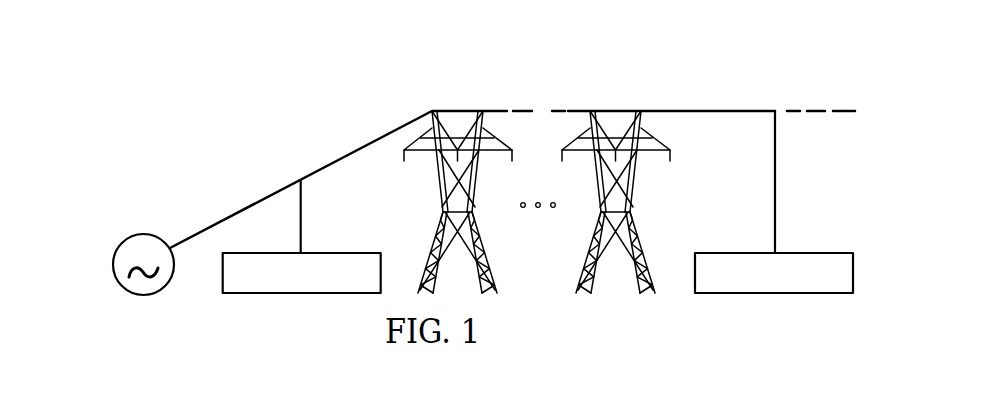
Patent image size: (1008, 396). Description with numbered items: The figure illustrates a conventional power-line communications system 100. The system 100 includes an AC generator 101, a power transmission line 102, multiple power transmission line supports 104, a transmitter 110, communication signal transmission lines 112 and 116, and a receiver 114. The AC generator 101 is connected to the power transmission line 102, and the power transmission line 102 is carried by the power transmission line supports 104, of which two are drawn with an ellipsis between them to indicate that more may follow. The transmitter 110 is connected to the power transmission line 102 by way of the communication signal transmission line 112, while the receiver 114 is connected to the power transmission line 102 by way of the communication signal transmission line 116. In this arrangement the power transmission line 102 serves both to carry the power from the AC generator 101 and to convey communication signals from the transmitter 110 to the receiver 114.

The power-line communications system 100 is at (192, 114).
The AC generator 101 is at (113, 263).
The power transmission line 102 is at (236, 213).
The power transmission line supports 104 is at (433, 180).
The transmitter 110 is at (282, 295).
The communication signal transmission line 112 is at (299, 218).
The receiver 114 is at (793, 295).
The communication signal transmission line 116 is at (777, 183).